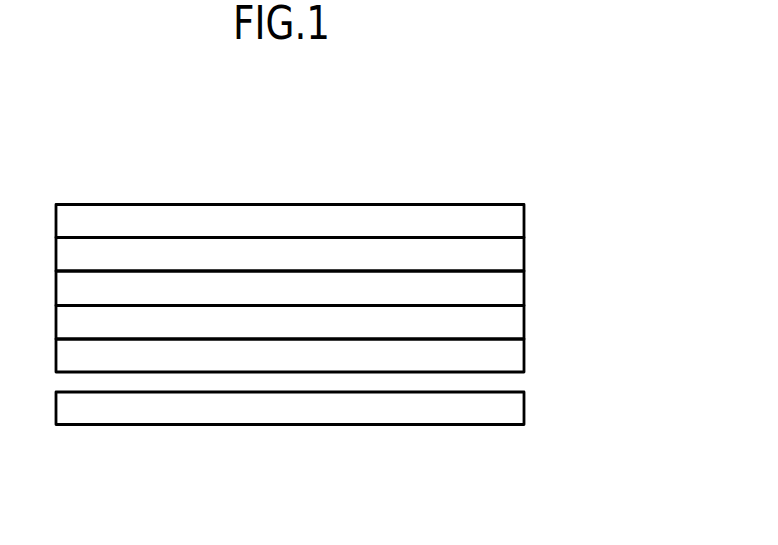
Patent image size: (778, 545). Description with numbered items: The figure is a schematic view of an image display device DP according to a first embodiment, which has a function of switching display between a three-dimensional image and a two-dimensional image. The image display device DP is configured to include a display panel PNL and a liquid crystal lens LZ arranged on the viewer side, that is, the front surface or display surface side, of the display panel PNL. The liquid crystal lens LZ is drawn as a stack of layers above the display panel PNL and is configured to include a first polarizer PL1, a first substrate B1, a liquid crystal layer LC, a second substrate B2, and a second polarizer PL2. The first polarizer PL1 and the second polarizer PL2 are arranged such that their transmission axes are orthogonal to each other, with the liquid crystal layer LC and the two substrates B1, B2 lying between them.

The image display device DP is at (91, 165).
The liquid crystal lens LZ is at (635, 210).
The second polarizer PL2 is at (512, 217).
The second substrate B2 is at (512, 252).
The liquid crystal layer LC is at (512, 286).
The first substrate B1 is at (512, 320).
The first polarizer PL1 is at (512, 353).
The display panel PNL is at (512, 405).